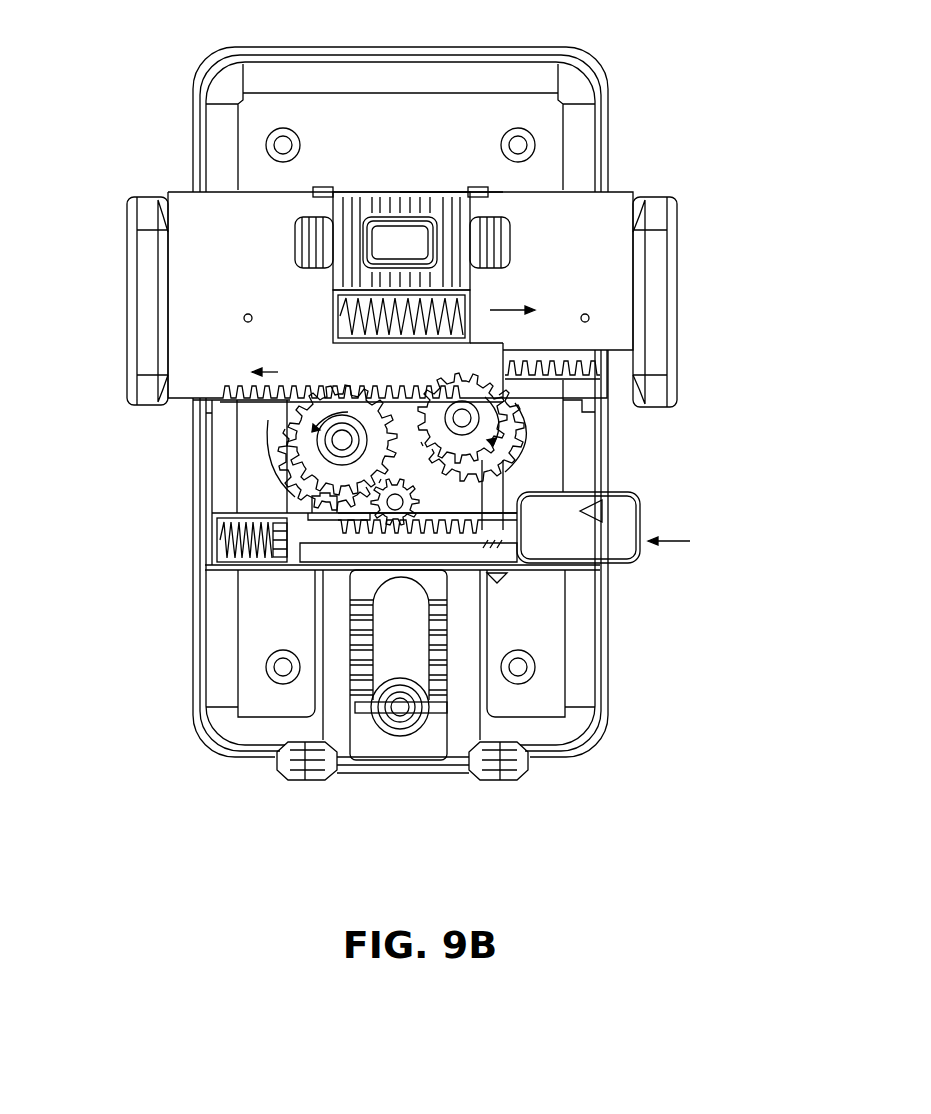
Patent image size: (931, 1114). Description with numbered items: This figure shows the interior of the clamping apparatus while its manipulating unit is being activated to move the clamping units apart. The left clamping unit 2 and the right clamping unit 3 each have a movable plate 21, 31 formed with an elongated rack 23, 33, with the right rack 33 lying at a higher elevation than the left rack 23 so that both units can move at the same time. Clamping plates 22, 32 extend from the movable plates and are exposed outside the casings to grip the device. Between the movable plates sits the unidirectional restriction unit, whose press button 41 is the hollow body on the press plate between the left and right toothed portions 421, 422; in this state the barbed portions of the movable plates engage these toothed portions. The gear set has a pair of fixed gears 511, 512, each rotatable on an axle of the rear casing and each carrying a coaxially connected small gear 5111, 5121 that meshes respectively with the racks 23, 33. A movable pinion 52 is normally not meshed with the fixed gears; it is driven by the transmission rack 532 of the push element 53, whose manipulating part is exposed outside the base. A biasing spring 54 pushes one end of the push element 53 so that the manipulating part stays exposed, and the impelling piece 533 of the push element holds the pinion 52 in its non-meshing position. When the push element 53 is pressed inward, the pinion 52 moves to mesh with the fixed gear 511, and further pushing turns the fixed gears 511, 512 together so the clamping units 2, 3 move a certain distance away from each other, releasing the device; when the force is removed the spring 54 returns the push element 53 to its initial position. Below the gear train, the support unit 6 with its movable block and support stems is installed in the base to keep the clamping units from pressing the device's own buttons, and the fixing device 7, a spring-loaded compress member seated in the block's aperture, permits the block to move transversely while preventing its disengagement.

The left clamping unit 2 is at (269, 278).
The movable plate 21 is at (193, 212).
The clamping plate 22 is at (142, 245).
The elongated rack 23 is at (243, 390).
The right clamping unit 3 is at (584, 279).
The movable plate 31 is at (617, 212).
The clamping plate 32 is at (657, 252).
The elongated rack 33 is at (550, 367).
The press button 41 is at (388, 230).
The left toothed portion 421 is at (320, 228).
The right toothed portion 422 is at (490, 233).
The fixed gear 511 is at (292, 413).
The small gear 5111 is at (297, 470).
The fixed gear 512 is at (527, 393).
The small gear 5121 is at (530, 443).
The movable pinion 52 is at (383, 513).
The push element 53 is at (627, 523).
The transmission rack 532 is at (487, 573).
The impelling piece 533 is at (317, 507).
The biasing spring 54 is at (227, 538).
The support unit 6 is at (490, 778).
The fixing device 7 is at (382, 745).